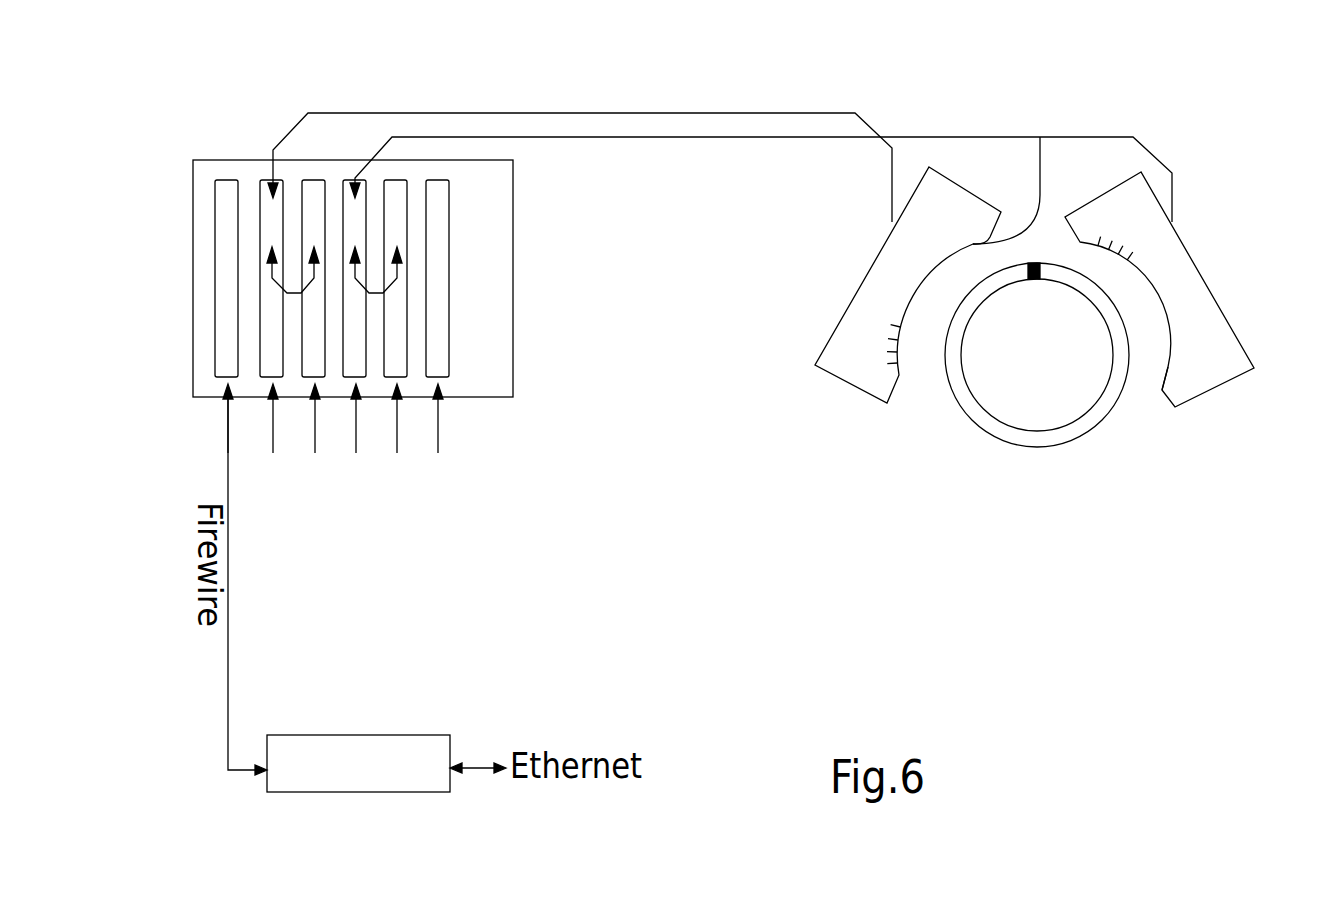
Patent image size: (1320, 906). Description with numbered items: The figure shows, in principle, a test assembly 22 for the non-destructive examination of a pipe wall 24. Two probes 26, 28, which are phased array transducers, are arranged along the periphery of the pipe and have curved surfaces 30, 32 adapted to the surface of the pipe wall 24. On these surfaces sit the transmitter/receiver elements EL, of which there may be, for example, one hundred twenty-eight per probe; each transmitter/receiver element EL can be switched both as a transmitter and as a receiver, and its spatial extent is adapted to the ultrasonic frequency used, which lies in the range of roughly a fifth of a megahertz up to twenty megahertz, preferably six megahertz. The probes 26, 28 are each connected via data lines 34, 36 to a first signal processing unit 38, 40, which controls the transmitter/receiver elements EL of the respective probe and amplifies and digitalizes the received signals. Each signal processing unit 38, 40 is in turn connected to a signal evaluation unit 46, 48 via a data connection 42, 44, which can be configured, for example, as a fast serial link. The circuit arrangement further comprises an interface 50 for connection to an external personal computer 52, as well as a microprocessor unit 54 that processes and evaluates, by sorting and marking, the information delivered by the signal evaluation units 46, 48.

The test assembly 22 is at (718, 275).
The pipe wall 24 is at (956, 438).
The probe 26 is at (878, 285).
The probe 28 is at (1187, 275).
The curved surface 30 is at (1015, 168).
The curved surface 32 is at (1168, 367).
The data line 34 is at (580, 137).
The data line 36 is at (505, 112).
The first signal processing unit 38 is at (276, 434).
The first signal processing unit 40 is at (358, 434).
The data connection 42 is at (395, 282).
The data connection 44 is at (302, 292).
The signal evaluation unit 46 is at (317, 434).
The signal evaluation unit 48 is at (398, 434).
The interface 50 is at (223, 243).
The personal computer 52 is at (373, 757).
The microprocessor unit 54 is at (440, 434).
The transmitter/receiver element EL is at (878, 347).